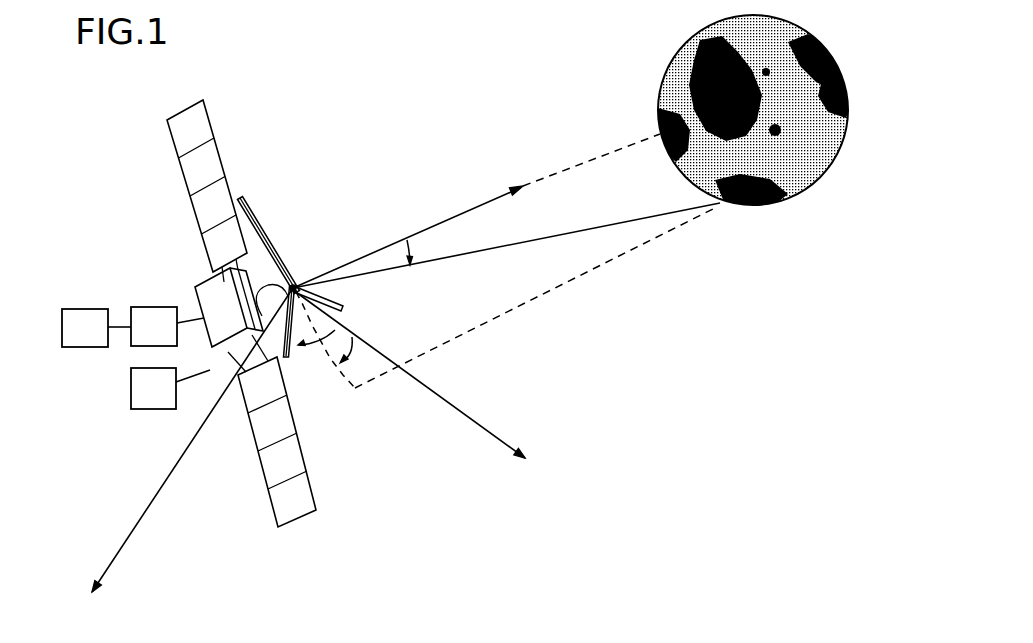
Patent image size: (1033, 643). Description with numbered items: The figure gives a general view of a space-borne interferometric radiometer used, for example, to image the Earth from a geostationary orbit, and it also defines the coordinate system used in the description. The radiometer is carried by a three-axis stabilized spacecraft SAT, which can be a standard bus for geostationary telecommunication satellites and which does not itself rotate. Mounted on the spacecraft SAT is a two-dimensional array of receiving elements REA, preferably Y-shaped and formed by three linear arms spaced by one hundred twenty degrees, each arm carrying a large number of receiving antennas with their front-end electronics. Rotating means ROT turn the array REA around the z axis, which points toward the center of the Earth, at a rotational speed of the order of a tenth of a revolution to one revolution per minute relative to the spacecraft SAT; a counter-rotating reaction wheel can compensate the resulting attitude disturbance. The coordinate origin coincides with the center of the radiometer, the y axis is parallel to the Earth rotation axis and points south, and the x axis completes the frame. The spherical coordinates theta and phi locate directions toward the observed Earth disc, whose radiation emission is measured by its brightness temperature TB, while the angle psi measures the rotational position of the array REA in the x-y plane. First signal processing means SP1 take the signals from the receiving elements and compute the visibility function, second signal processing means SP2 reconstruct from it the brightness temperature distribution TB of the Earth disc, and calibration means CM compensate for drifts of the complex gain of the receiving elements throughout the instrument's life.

The three-axis stabilized spacecraft SAT is at (277, 387).
The array of receiving elements REA is at (270, 216).
The means for rotating the REA array ROT is at (290, 293).
The first signal processing means SP1 is at (157, 308).
The second signal processing means SP2 is at (77, 308).
The calibration means CM is at (147, 409).
The brightness temperature TB is at (755, 142).
The x axis x is at (420, 374).
The y axis y is at (171, 440).
The z axis z is at (476, 211).
The spherical coordinate angle θ theta is at (420, 247).
The angle ψ psi is at (316, 352).
The spherical coordinate angle φ phi is at (353, 355).